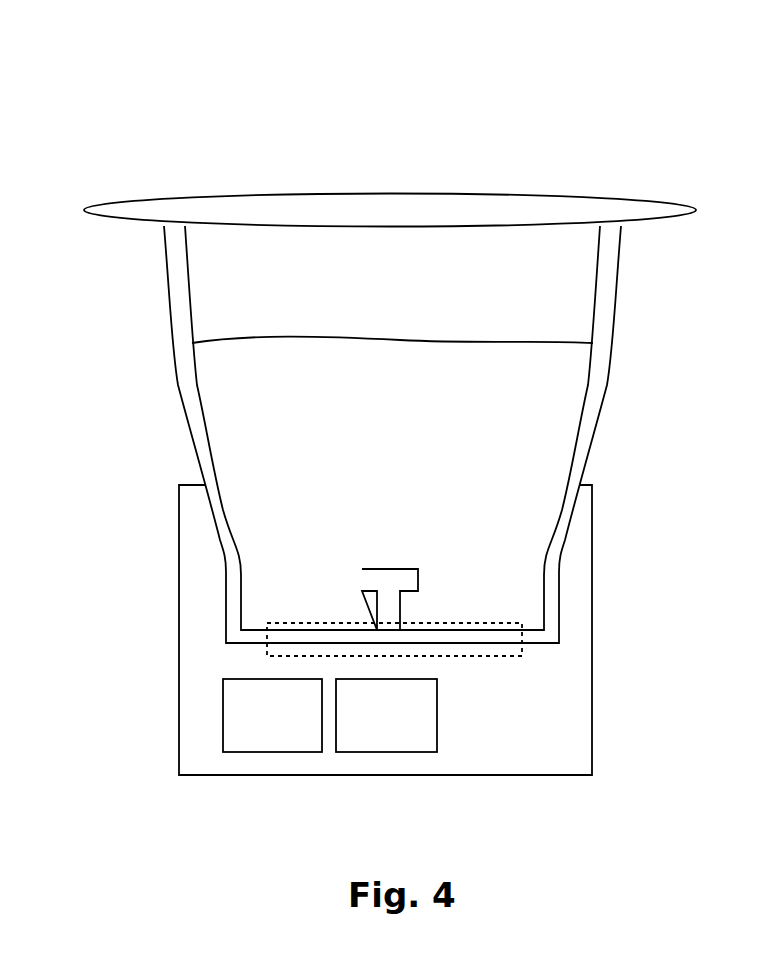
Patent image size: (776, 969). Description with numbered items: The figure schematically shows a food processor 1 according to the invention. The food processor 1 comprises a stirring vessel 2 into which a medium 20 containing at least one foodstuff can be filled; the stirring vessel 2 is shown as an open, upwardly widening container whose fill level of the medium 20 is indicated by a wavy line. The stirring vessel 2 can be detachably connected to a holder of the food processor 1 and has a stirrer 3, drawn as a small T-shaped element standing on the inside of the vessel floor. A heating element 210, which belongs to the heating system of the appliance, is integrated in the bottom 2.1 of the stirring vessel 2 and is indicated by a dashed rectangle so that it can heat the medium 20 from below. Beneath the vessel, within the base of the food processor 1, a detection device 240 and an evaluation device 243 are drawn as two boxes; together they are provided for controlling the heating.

The food processor 1 is at (104, 114).
The stirring vessel 2 is at (178, 382).
The bottom 2.1 is at (500, 607).
The medium 20 is at (547, 432).
The stirrer 3 is at (378, 610).
The heating element 210 is at (510, 656).
The detection device 240 is at (299, 728).
The evaluation device 243 is at (414, 728).